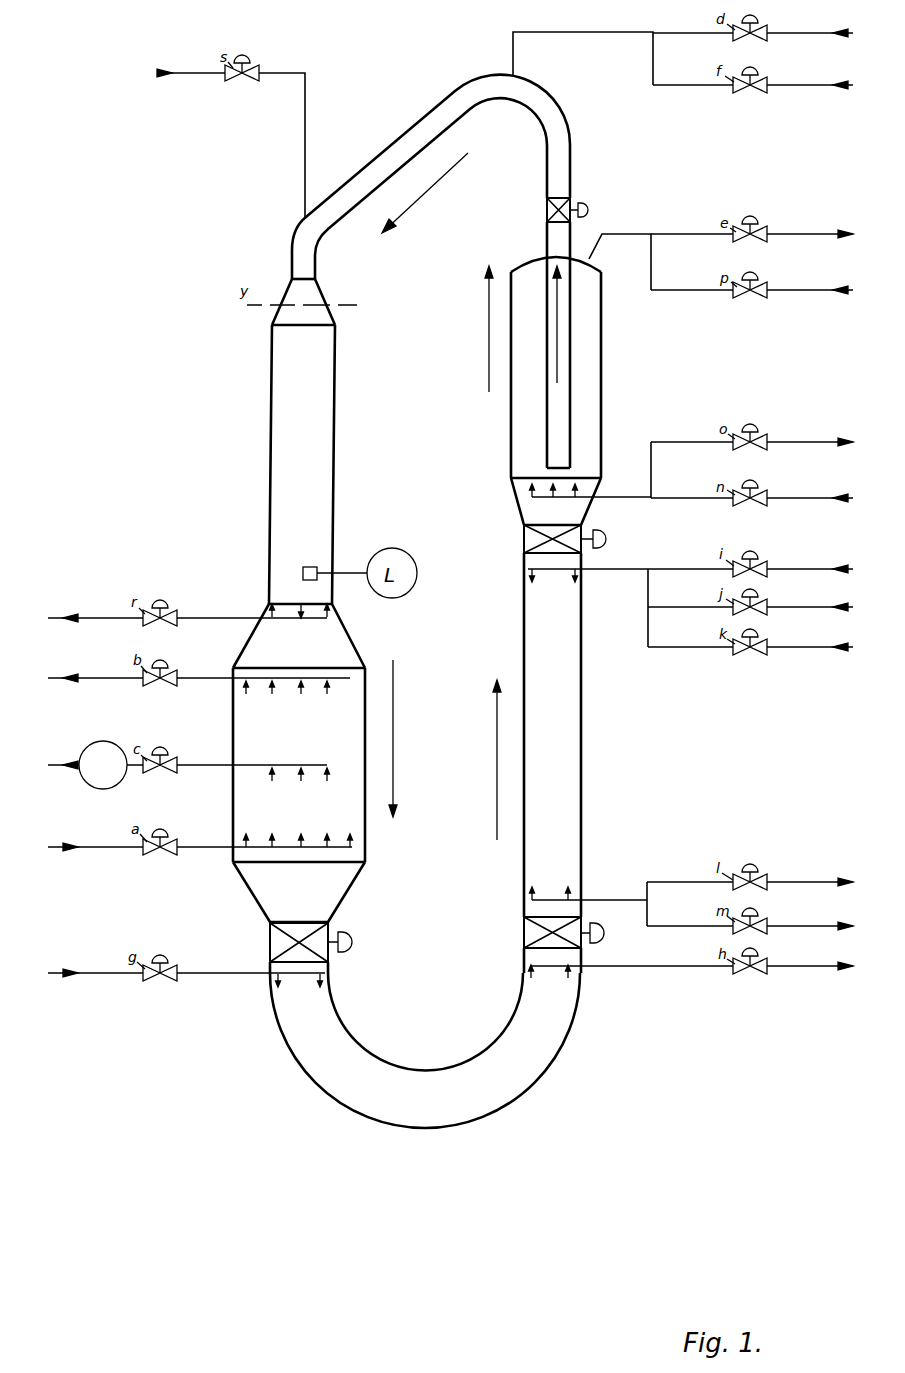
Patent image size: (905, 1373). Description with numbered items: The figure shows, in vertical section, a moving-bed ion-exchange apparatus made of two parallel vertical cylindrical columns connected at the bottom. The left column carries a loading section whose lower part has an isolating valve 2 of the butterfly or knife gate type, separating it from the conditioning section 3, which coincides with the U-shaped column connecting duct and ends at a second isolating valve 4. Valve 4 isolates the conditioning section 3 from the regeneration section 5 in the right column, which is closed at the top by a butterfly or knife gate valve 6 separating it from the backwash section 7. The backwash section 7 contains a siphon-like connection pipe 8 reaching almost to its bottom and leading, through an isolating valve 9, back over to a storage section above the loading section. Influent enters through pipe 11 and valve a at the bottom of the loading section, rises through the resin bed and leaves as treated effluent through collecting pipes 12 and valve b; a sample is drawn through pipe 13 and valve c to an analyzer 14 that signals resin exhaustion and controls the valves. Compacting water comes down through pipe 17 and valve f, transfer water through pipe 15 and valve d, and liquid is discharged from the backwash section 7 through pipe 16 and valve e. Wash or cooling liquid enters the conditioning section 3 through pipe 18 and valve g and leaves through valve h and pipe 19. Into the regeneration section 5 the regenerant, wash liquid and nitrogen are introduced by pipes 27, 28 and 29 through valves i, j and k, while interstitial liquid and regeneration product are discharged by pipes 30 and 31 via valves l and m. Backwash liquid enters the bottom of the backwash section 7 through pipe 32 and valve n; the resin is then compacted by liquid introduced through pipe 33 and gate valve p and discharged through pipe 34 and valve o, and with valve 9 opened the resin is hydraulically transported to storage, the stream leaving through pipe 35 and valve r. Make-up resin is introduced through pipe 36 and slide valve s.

The isolating valve 2 is at (285, 948).
The conditioning section 3 is at (440, 1118).
The isolating valve 4 is at (535, 933).
The regeneration section 5 is at (565, 823).
The butterfly or knife gate valve 6 is at (536, 539).
The backwash section 7 is at (583, 461).
The siphon-like connection pipe 8 is at (317, 239).
The isolating valve 9 is at (546, 212).
The pipe 11 is at (200, 841).
The collecting pipes 12 is at (199, 676).
The pipe 13 is at (189, 763).
The analyzer 14 is at (103, 765).
The pipe 15 is at (753, 27).
The pipe 16 is at (752, 229).
The pipe 17 is at (753, 80).
The pipe 18 is at (186, 970).
The pipe 19 is at (691, 962).
The pipe 27 is at (750, 563).
The pipe 28 is at (750, 601).
The pipe 29 is at (750, 641).
The pipe 30 is at (750, 876).
The pipe 31 is at (750, 920).
The pipe 32 is at (752, 492).
The pipe 33 is at (752, 284).
The pipe 34 is at (752, 436).
The pipe 35 is at (189, 612).
The pipe 36 is at (231, 136).